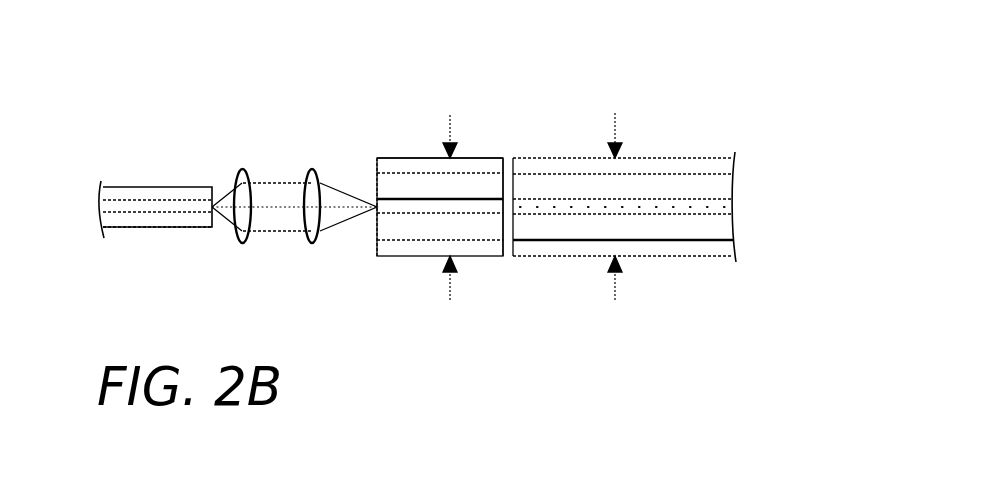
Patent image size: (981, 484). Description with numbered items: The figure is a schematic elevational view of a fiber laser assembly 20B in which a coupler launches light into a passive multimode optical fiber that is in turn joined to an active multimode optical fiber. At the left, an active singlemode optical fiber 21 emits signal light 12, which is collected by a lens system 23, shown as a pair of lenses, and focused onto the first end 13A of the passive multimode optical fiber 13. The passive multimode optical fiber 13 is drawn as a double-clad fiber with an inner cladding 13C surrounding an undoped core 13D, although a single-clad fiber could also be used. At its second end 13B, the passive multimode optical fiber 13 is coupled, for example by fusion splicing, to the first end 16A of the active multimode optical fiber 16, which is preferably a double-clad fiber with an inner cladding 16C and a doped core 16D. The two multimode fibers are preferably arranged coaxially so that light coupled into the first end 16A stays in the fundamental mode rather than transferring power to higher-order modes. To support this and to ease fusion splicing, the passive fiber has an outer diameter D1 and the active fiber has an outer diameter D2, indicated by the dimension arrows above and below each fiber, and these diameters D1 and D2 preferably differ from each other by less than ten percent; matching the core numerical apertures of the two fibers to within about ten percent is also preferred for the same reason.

The fiber laser assembly 20B is at (248, 54).
The active singlemode optical fiber 21 is at (123, 187).
The lens system 23 is at (277, 133).
The signal light 12 is at (270, 213).
The passive multimode optical fiber 13 is at (420, 158).
The first end of the passive multimode optical fiber 13A is at (375, 223).
The second end of the passive multimode optical fiber 13B is at (503, 187).
The inner cladding 13C is at (393, 183).
The undoped core 13D is at (458, 207).
The active multimode optical fiber 16 is at (653, 158).
The first end of the active multimode optical fiber 16A is at (513, 240).
The inner cladding 16C is at (583, 183).
The doped core 16D is at (673, 207).
The outer diameter of the passive multimode optical fiber D1 is at (462, 226).
The outer diameter of the active multimode optical fiber D2 is at (627, 226).